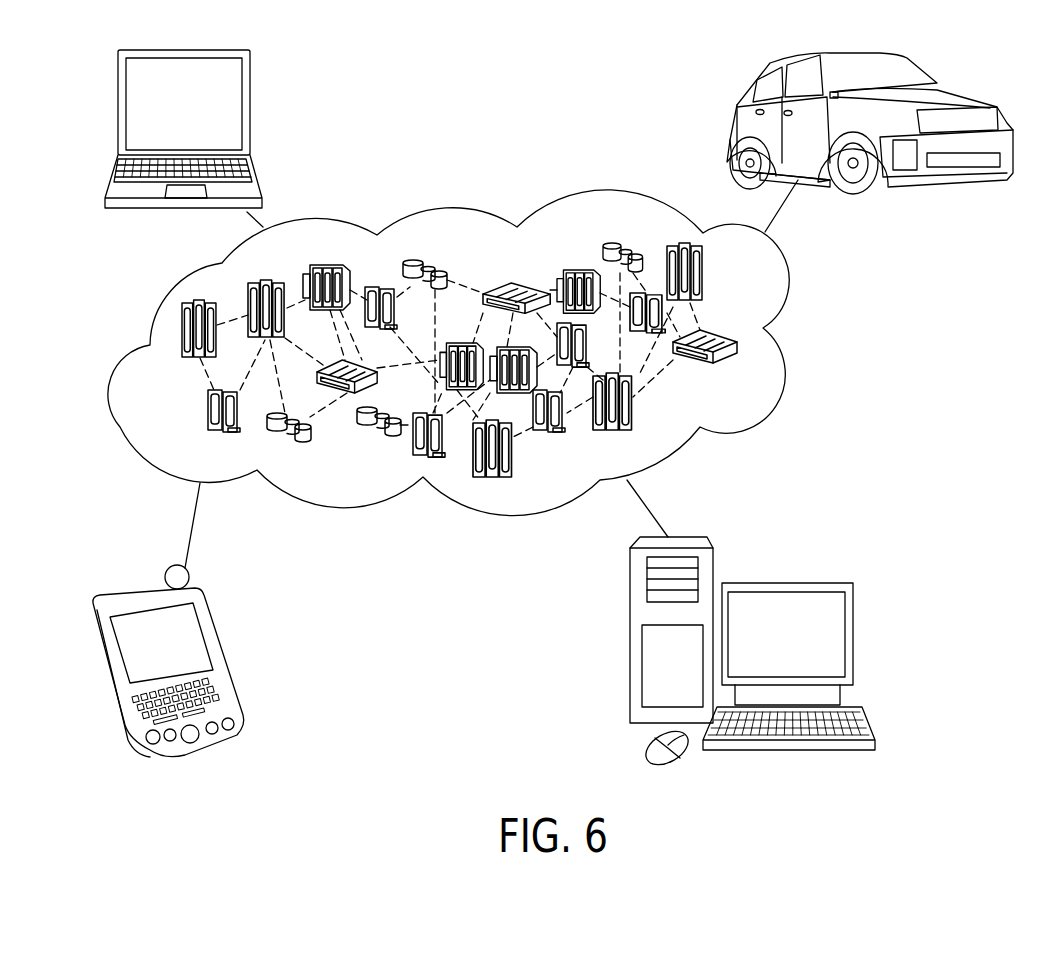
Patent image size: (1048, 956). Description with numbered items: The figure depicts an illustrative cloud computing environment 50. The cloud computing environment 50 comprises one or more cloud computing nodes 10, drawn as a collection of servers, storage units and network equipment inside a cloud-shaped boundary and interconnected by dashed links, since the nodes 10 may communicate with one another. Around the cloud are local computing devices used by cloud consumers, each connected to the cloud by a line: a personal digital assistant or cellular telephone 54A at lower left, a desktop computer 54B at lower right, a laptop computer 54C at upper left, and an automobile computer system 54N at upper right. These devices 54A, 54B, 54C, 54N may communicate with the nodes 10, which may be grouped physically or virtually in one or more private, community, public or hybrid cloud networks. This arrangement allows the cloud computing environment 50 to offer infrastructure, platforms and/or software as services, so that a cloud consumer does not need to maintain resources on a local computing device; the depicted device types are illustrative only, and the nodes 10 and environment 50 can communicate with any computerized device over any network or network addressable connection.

The cloud computing nodes 10 is at (752, 380).
The cloud computing environment 50 is at (803, 280).
The personal digital assistant or cellular telephone 54A is at (215, 640).
The desktop computer 54B is at (853, 635).
The laptop computer 54C is at (250, 105).
The automobile computer system 54N is at (925, 80).